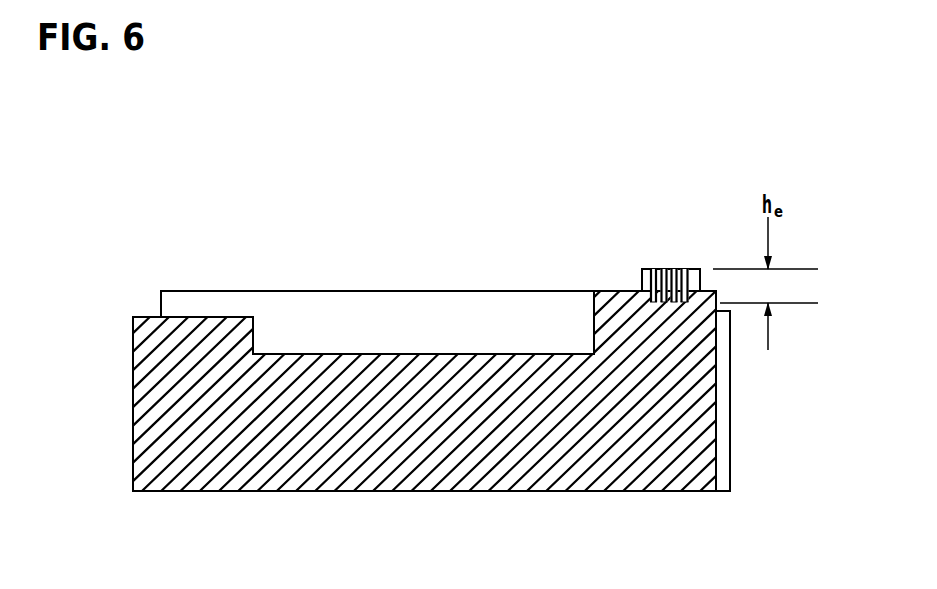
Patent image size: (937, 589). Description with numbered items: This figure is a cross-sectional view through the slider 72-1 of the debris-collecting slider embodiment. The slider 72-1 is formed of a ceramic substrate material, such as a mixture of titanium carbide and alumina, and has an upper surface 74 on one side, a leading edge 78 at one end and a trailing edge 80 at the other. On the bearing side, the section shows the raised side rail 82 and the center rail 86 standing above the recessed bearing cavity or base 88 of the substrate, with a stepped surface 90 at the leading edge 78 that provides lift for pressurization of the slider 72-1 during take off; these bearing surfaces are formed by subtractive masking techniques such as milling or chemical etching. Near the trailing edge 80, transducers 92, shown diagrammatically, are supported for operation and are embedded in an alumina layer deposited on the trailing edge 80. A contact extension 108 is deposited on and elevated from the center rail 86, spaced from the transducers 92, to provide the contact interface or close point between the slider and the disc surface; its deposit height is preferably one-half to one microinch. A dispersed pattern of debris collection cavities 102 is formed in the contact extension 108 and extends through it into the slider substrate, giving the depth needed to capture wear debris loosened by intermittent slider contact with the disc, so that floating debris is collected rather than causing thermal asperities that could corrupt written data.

The slider 72-1 is at (516, 228).
The upper surface 74 is at (608, 491).
The leading edge 78 is at (132, 393).
The trailing edge 80 is at (789, 385).
The raised side rail 82 is at (363, 290).
The center rail 86 is at (598, 290).
The recessed bearing cavity or base 88 is at (398, 353).
The stepped surface 90 is at (196, 317).
The transducers 92 is at (731, 405).
The debris collection cavities 102 is at (684, 269).
The contact extension 108 is at (683, 258).